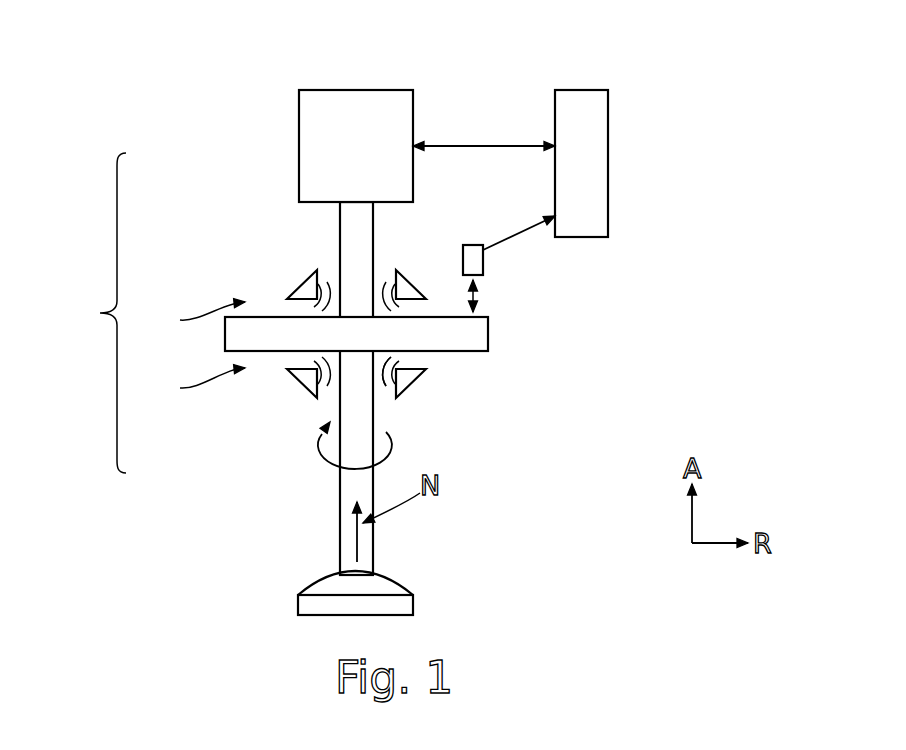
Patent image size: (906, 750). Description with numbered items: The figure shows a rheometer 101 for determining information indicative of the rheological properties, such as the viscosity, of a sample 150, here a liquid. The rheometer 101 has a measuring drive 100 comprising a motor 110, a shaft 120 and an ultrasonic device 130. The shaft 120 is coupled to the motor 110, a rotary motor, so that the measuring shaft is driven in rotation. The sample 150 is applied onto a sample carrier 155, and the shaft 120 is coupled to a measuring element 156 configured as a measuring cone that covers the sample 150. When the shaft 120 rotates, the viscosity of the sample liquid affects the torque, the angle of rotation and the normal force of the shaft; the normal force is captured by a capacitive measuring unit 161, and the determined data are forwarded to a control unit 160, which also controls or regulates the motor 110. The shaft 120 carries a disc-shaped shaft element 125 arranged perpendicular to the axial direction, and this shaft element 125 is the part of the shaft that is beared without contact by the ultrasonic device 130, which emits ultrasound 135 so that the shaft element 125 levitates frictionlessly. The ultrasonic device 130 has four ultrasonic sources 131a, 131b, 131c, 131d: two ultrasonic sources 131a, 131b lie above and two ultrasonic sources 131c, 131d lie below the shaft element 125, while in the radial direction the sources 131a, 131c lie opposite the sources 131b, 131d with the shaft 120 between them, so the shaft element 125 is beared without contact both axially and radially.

The measuring drive 100 is at (85, 313).
The rheometer 101 is at (714, 108).
The motor 110 is at (336, 104).
The shaft 120 is at (357, 213).
The shaft element 125 is at (488, 330).
The ultrasonic device 130 is at (187, 348).
The ultrasonic source 131a is at (307, 285).
The ultrasonic source 131b is at (403, 287).
The ultrasonic source 131c is at (303, 380).
The ultrasonic source 131d is at (407, 377).
The ultrasound 135 is at (413, 362).
The sample 150 is at (415, 585).
The sample carrier 155 is at (400, 602).
The measuring element 156 is at (333, 585).
The control unit 160 is at (587, 105).
The measuring unit 161 is at (476, 258).